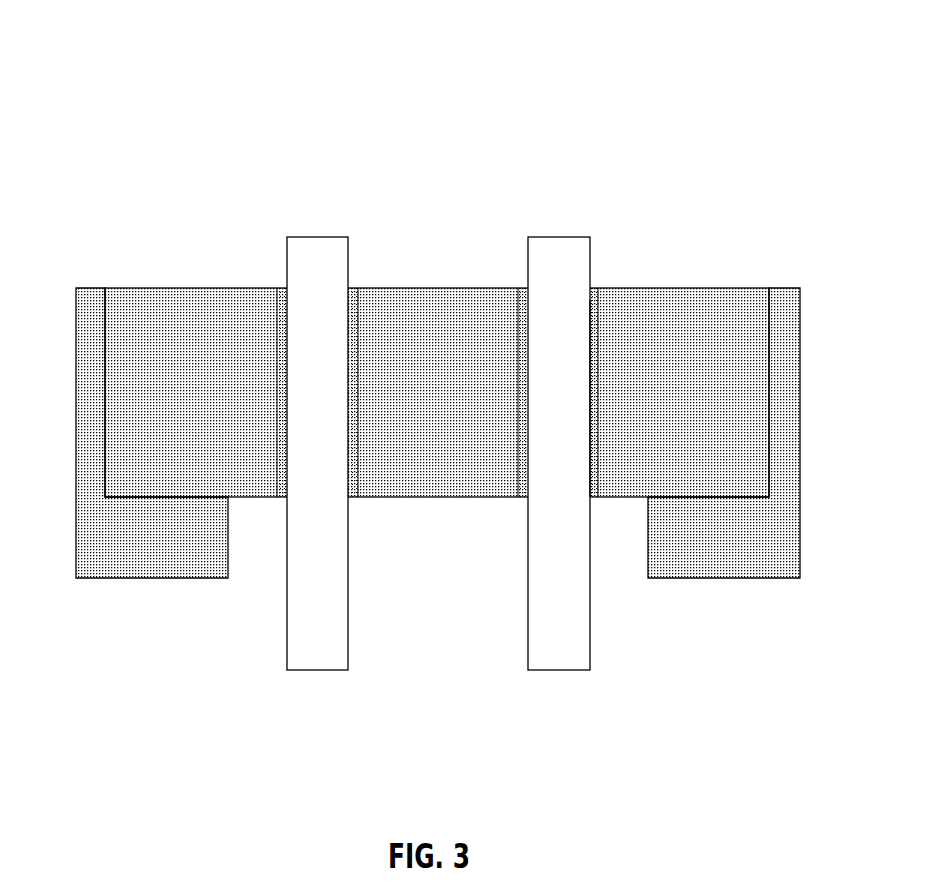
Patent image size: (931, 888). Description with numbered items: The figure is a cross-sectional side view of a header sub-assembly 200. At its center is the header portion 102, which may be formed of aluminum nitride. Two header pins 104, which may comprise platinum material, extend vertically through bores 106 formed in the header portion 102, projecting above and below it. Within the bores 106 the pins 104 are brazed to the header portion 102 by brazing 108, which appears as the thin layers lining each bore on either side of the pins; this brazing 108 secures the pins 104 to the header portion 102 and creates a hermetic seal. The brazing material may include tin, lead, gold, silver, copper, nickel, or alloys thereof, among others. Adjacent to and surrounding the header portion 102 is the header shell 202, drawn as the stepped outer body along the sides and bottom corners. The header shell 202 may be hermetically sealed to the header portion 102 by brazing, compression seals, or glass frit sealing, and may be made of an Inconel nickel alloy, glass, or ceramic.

The header sub-assembly 200 is at (438, 342).
The header portion 102 is at (462, 379).
The header pins 104 is at (520, 253).
The bores 106 is at (594, 321).
The brazing 108 is at (357, 283).
The header shell 202 is at (171, 543).